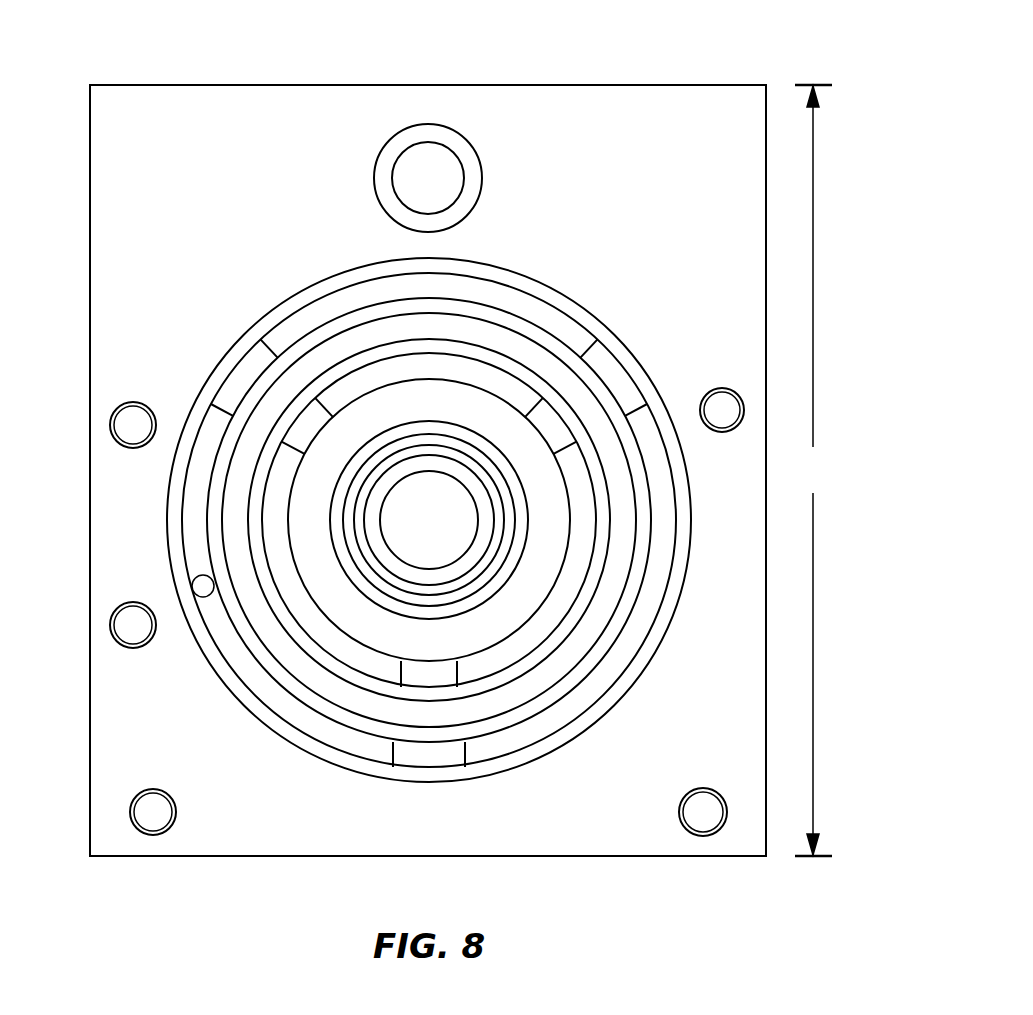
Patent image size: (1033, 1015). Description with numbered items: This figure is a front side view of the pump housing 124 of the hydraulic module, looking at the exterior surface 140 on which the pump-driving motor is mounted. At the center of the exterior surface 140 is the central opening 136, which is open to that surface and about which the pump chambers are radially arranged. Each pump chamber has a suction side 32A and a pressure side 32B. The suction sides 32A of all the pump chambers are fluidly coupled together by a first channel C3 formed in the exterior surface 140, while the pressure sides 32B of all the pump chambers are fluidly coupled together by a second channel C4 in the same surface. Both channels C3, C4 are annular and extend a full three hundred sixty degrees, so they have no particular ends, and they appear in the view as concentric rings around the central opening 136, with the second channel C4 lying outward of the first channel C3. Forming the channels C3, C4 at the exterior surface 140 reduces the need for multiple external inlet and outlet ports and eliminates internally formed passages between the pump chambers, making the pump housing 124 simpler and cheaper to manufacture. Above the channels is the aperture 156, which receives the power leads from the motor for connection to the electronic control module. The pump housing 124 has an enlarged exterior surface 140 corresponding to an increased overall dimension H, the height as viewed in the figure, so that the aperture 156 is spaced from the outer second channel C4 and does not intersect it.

The pump housing 124 is at (676, 48).
The exterior surface 140 is at (709, 158).
The aperture 156 is at (404, 205).
The central opening 136 is at (403, 560).
The suction side 32A is at (317, 412).
The pressure side 32B is at (240, 378).
The first channel C3 is at (487, 365).
The second channel C4 is at (470, 278).
The overall dimension H is at (813, 470).